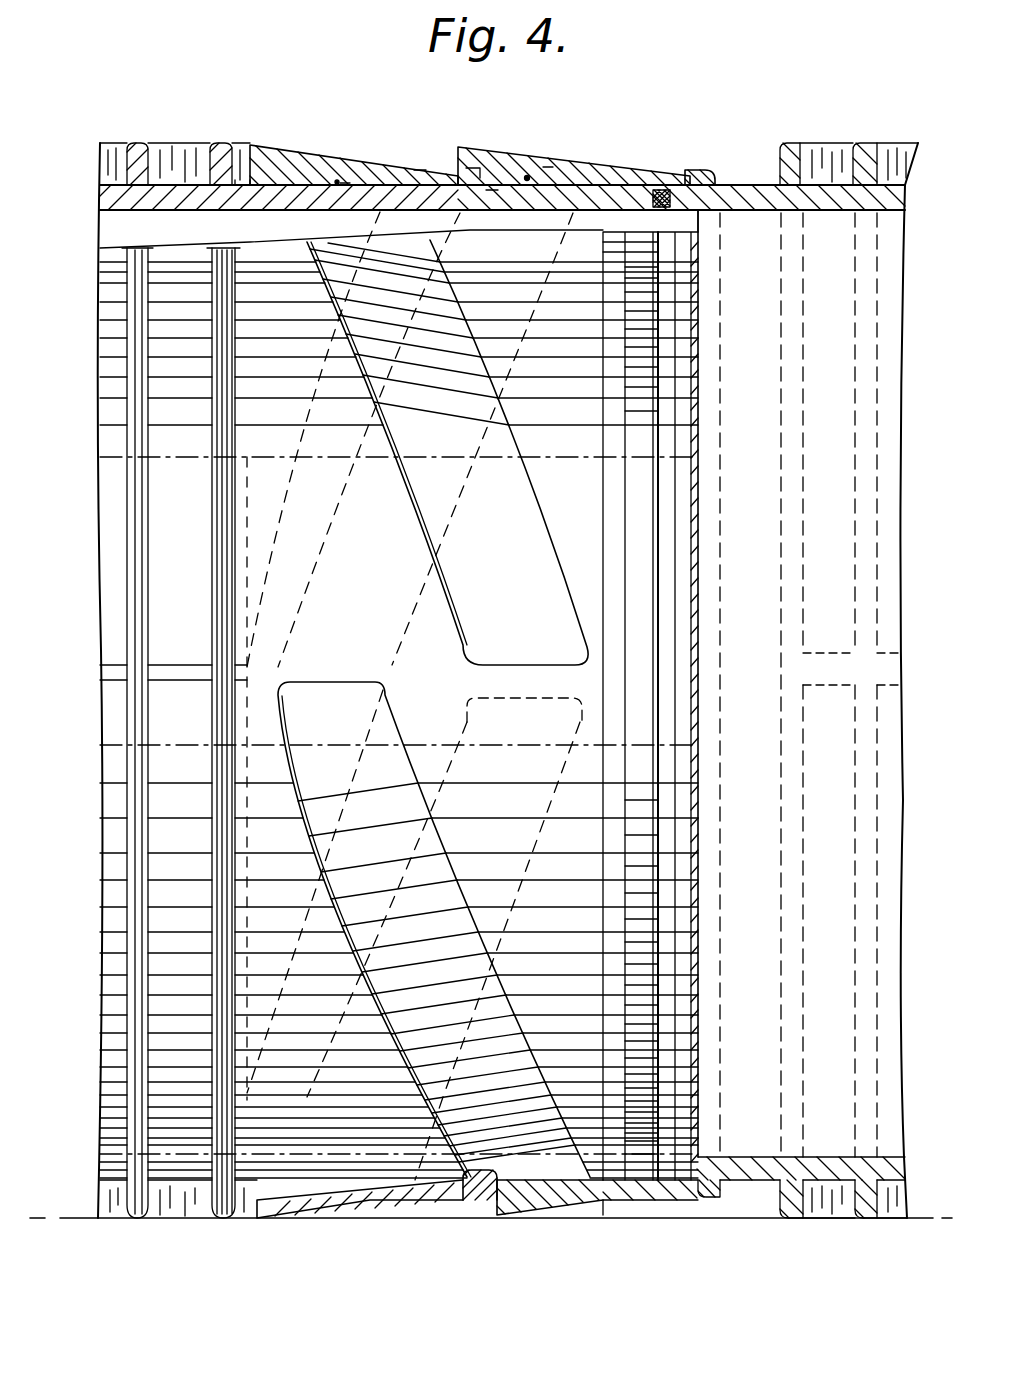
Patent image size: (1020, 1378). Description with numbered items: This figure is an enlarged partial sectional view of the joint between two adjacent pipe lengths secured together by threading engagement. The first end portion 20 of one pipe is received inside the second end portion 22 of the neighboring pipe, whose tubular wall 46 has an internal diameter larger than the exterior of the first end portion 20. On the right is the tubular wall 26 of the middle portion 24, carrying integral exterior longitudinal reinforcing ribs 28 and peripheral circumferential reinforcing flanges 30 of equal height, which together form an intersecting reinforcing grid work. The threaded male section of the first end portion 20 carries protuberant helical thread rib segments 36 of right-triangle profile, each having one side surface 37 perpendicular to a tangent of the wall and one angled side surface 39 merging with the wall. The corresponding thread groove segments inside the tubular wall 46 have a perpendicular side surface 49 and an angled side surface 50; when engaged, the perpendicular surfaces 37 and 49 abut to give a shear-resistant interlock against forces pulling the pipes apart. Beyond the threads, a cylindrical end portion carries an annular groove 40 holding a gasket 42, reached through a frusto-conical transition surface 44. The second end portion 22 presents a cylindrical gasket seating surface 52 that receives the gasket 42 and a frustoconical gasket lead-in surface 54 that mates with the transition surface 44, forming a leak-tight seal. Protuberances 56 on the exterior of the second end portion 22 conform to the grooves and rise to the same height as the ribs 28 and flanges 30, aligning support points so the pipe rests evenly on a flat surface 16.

The flat surface 16 is at (73, 1217).
The first end portion 20 is at (706, 328).
The second end portion 22 is at (592, 144).
The middle portion 24 is at (784, 130).
The tubular wall 26 is at (738, 188).
The exterior longitudinal reinforcing ribs 28 is at (824, 150).
The peripheral circumferential reinforcing flanges 30 is at (864, 152).
The helical thread rib segments 36 is at (347, 255).
The side surface 37 is at (238, 183).
The side surface 39 is at (337, 182).
The annular groove 40 is at (663, 213).
The gasket 42 is at (670, 190).
The frusto-conical transition surface 44 is at (532, 272).
The tubular wall 46 is at (420, 170).
The side surface 49 is at (492, 192).
The side surface 50 is at (345, 183).
The cylindrical gasket seating surface 52 is at (698, 173).
The frustoconical gasket lead-in surface 54 is at (578, 280).
The protuberances 56 is at (268, 148).